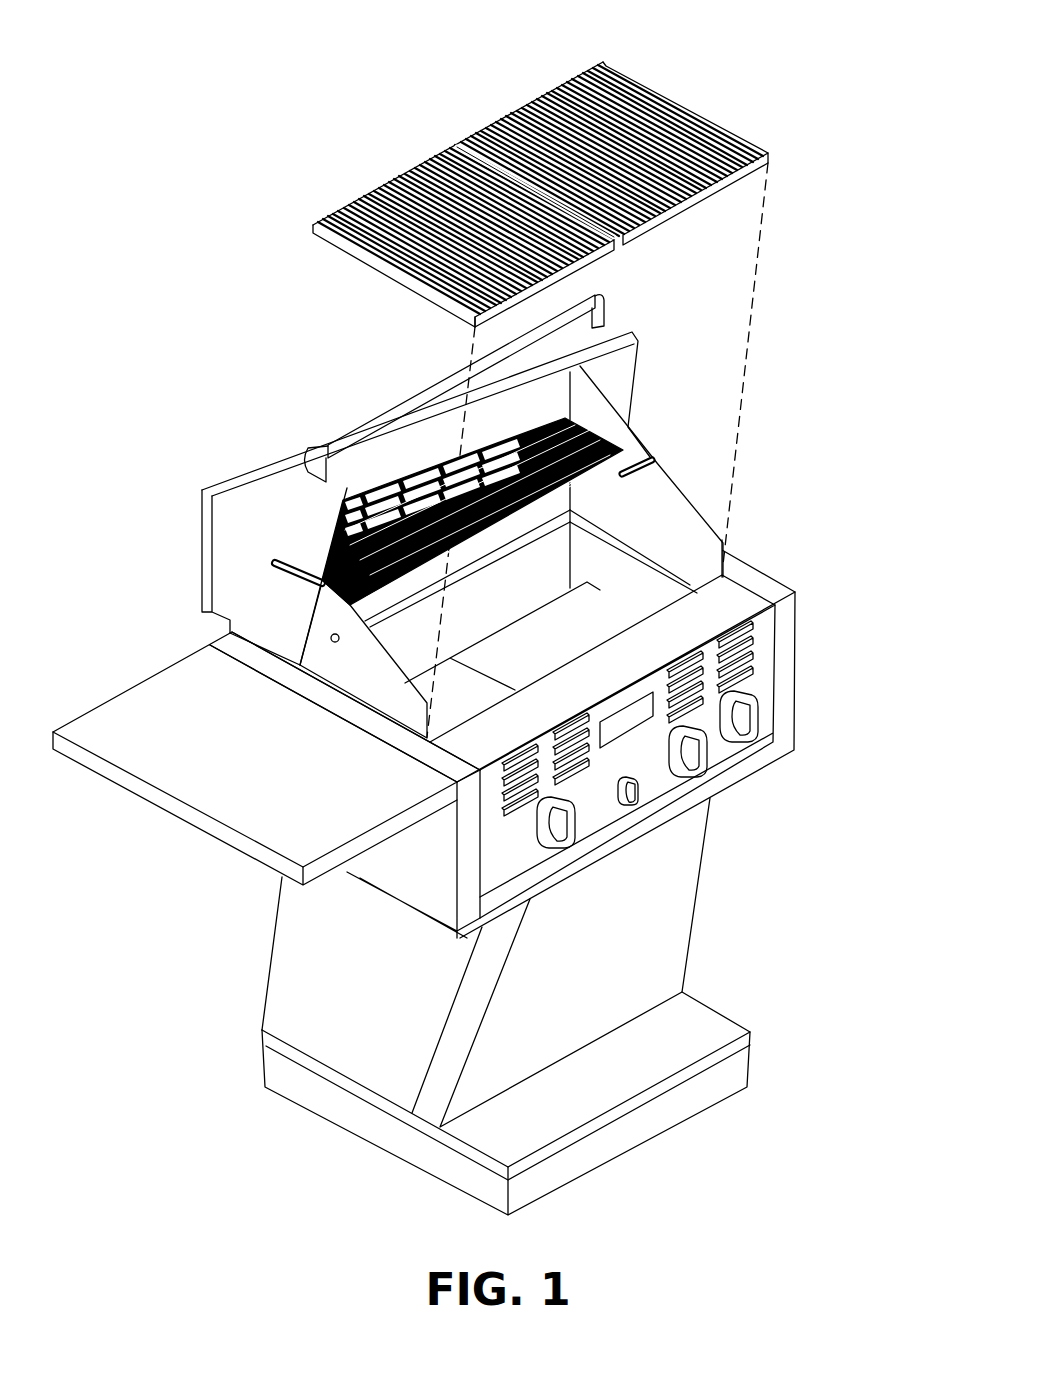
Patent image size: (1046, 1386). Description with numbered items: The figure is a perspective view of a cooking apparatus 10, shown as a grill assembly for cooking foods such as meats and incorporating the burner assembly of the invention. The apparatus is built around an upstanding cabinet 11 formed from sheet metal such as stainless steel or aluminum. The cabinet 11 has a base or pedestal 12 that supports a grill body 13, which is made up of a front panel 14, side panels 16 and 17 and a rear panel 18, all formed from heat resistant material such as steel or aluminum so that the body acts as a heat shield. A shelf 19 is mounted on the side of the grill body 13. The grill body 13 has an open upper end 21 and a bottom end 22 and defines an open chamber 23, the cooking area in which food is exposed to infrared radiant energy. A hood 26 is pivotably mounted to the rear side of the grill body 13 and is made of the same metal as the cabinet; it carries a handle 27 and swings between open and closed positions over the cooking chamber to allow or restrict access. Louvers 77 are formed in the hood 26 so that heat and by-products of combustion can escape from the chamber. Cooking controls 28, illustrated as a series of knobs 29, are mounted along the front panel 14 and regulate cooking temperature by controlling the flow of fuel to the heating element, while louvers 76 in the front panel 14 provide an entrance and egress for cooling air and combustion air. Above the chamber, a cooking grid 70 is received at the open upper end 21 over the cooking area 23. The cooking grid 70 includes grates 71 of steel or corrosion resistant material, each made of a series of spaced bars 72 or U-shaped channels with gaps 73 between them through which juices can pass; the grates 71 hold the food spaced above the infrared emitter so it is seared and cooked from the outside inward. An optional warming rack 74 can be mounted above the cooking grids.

The cooking apparatus 10 is at (820, 530).
The cabinet 11 is at (714, 846).
The base or pedestal 12 is at (690, 1017).
The grill body 13 is at (808, 668).
The front panel 14 is at (520, 862).
The side panel 16 is at (417, 885).
The side panel 17 is at (808, 695).
The rear panel 18 is at (560, 513).
The shelf 19 is at (235, 741).
The open upper end 21 is at (607, 537).
The bottom end 22 is at (443, 722).
The open chamber 23 is at (598, 598).
The hood 26 is at (208, 545).
The handle 27 is at (358, 430).
The cooking controls 28 is at (687, 778).
The knobs 29 is at (745, 732).
The cooking grid 70 is at (442, 120).
The grates 71 is at (650, 100).
The spaced bars 72 is at (630, 78).
The gaps 73 is at (580, 77).
The warming rack 74 is at (363, 659).
The louvers 76 is at (563, 730).
The louvers 77 is at (336, 548).